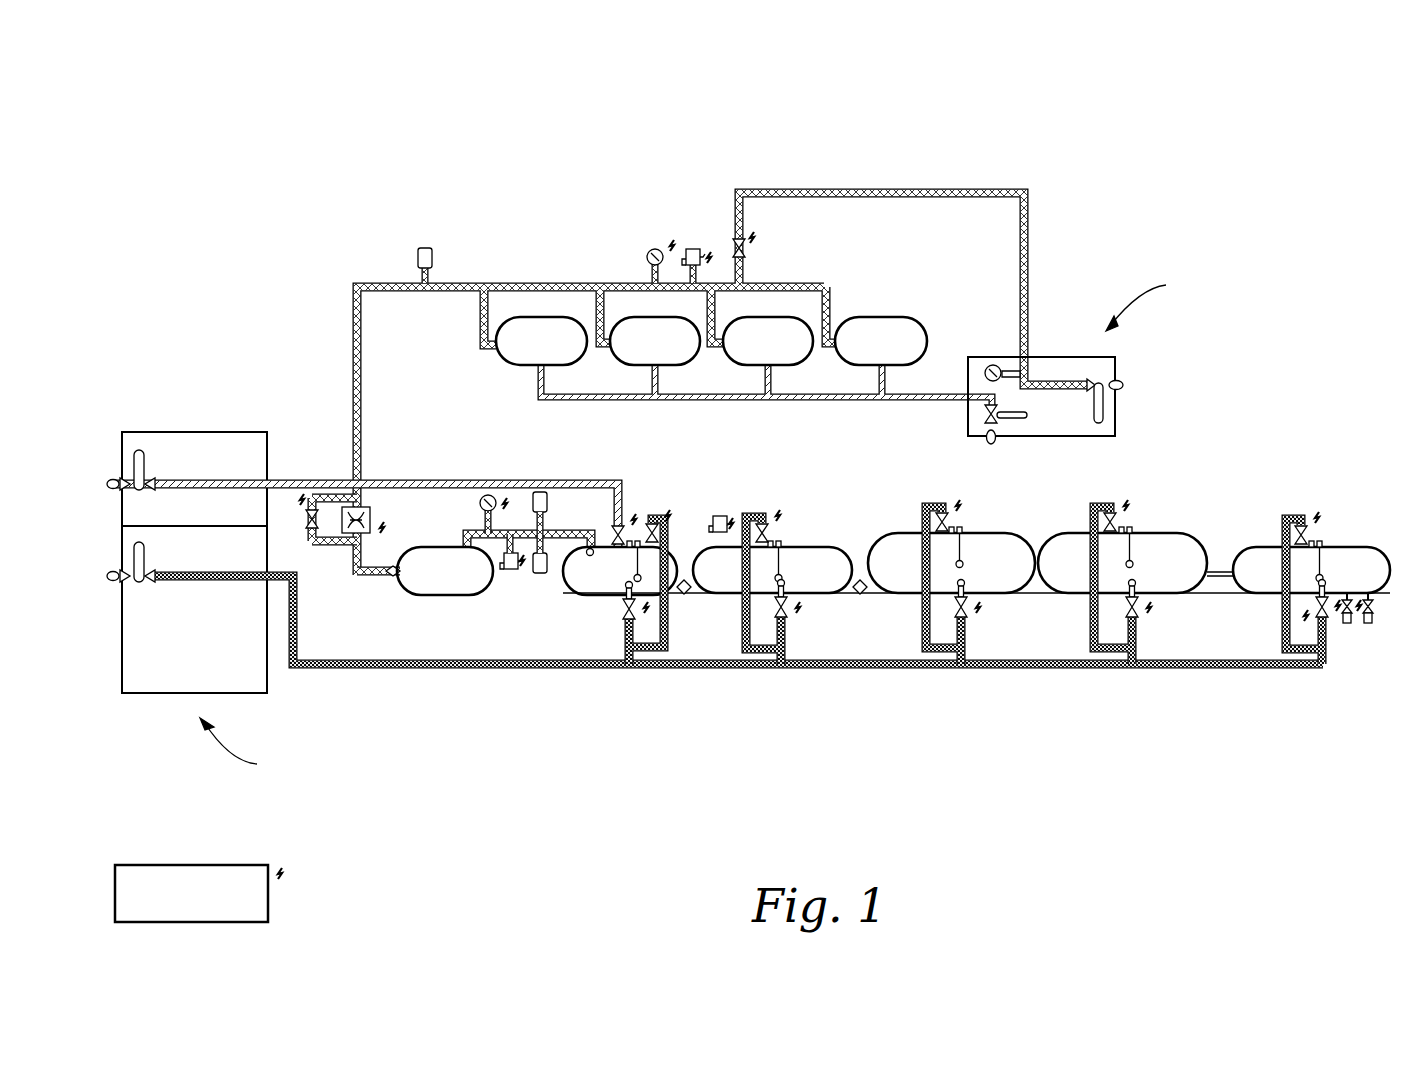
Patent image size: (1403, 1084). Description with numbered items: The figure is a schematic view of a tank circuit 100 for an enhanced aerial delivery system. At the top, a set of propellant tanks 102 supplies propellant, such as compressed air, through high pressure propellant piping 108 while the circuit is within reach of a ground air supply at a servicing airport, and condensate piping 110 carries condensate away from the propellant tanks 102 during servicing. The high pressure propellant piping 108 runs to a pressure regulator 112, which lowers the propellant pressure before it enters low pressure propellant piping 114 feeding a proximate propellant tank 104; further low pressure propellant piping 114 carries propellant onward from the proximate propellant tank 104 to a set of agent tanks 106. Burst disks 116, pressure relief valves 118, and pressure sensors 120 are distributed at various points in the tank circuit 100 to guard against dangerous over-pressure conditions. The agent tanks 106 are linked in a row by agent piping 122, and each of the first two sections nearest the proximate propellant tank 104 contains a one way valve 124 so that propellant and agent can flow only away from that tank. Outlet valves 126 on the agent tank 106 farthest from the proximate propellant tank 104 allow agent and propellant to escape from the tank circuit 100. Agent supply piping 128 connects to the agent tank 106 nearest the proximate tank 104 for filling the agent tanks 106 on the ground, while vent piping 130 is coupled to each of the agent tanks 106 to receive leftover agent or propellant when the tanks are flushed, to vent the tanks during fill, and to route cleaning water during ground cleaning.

The tank circuit 100 is at (1213, 98).
The propellant tanks 102 is at (711, 341).
The proximate propellant tank 104 is at (445, 571).
The agent tanks 106 is at (976, 554).
The high pressure propellant piping 108 is at (893, 190).
The condensate piping 110 is at (830, 401).
The pressure regulator 112 is at (372, 520).
The low pressure propellant piping 114 is at (589, 529).
The burst disks 116 is at (426, 247).
The pressure relief valves 118 is at (693, 247).
The pressure sensors 120 is at (655, 247).
The agent piping 122 is at (681, 595).
The one way valve 124 is at (684, 579).
The outlet valves 126 is at (1347, 625).
The agent supply piping 128 is at (301, 479).
The vent piping 130 is at (430, 669).